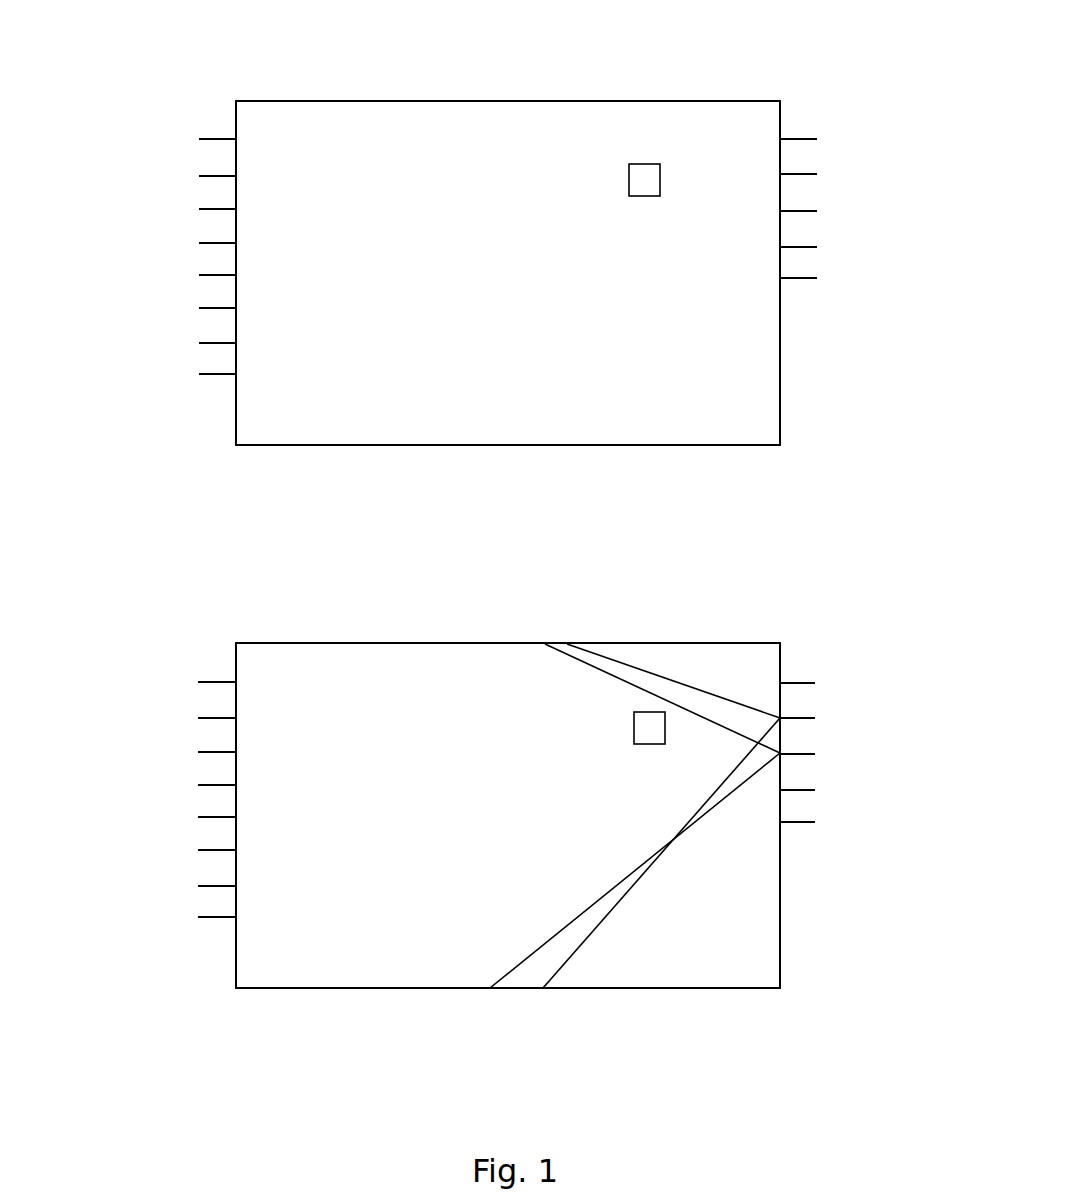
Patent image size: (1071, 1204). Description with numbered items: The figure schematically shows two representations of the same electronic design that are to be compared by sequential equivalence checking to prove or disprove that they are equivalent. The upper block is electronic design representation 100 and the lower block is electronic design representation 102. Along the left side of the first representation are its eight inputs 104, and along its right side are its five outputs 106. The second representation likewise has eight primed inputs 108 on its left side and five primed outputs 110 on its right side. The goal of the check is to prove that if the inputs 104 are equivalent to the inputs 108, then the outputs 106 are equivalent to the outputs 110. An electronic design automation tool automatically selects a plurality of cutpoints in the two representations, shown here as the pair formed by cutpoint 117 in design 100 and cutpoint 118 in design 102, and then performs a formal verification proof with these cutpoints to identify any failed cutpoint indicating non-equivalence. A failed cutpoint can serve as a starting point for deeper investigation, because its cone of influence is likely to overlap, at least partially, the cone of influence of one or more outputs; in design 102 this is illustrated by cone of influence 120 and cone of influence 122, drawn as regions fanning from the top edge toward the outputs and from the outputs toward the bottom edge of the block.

The electronic design representation 100 is at (436, 101).
The electronic design representation 102 is at (399, 644).
The inputs i1-i8 104 is at (140, 252).
The outputs o1-o5 106 is at (914, 238).
The inputs i1'-i8' 108 is at (120, 786).
The outputs o1'-o5' 110 is at (897, 762).
The cutpoint 117 is at (636, 164).
The cutpoint 118 is at (643, 712).
The cone of influence 120 is at (702, 688).
The cone of influence 122 is at (730, 793).